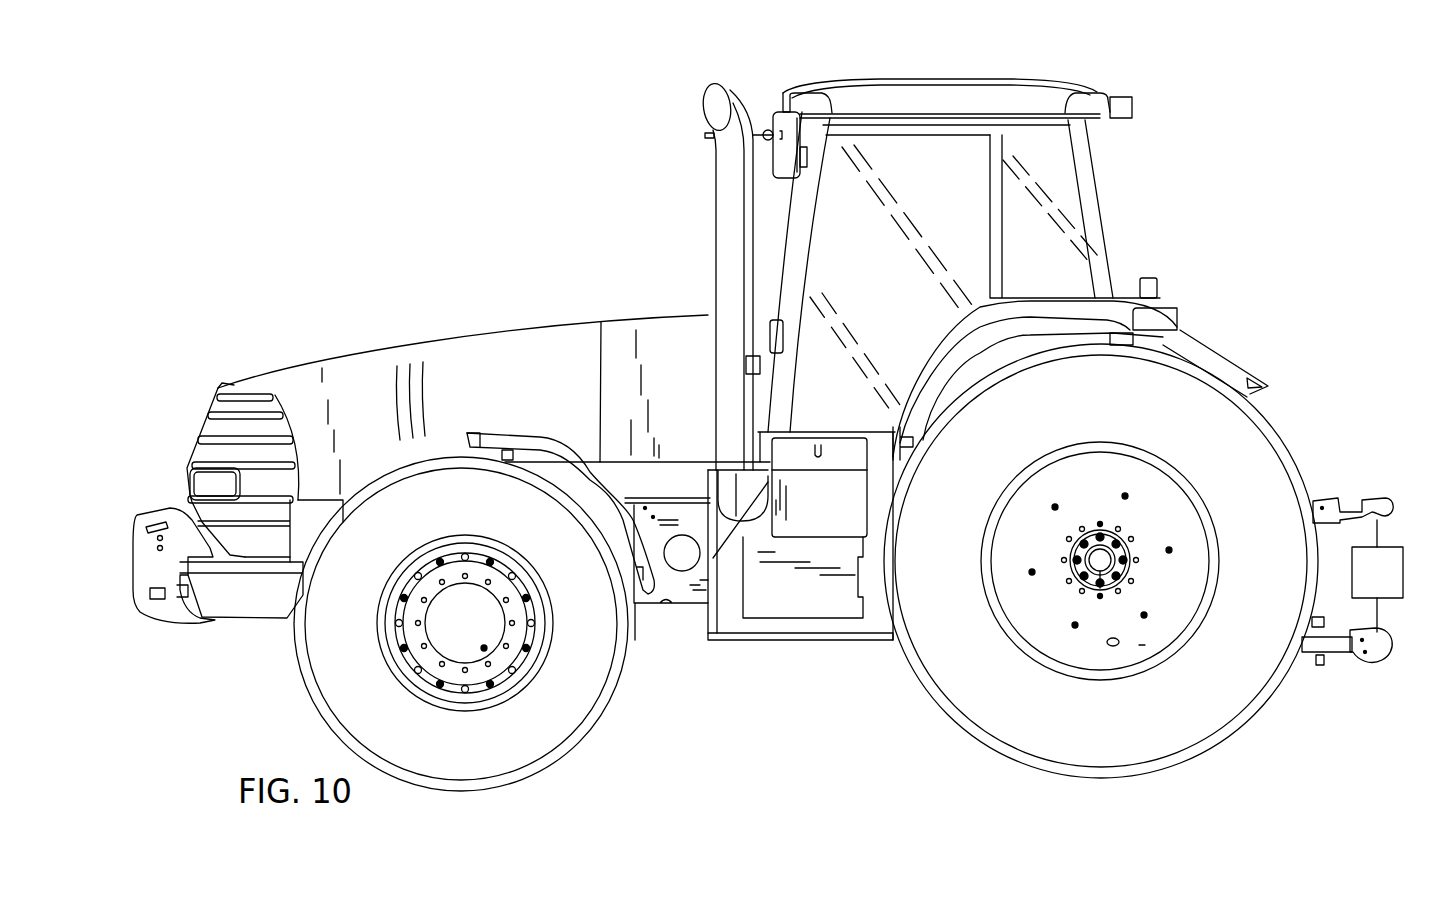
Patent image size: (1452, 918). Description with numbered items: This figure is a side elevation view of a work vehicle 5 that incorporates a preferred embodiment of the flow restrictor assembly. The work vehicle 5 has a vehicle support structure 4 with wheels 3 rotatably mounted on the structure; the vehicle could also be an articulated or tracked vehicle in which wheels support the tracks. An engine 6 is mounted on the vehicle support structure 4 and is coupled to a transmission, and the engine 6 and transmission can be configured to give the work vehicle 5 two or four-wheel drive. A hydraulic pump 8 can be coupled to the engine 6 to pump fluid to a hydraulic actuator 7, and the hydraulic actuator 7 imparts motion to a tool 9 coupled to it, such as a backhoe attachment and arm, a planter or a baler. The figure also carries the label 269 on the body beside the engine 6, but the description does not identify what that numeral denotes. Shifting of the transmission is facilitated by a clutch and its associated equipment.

The work vehicle 5 is at (679, 44).
The wheels 3 is at (548, 735).
The engine 6 is at (621, 478).
The side panel 269 is at (654, 486).
The vehicle support structure 4 is at (670, 604).
The hydraulic pump 8 is at (690, 561).
The hydraulic actuator 7 is at (1353, 492).
The tool 9 is at (1405, 562).